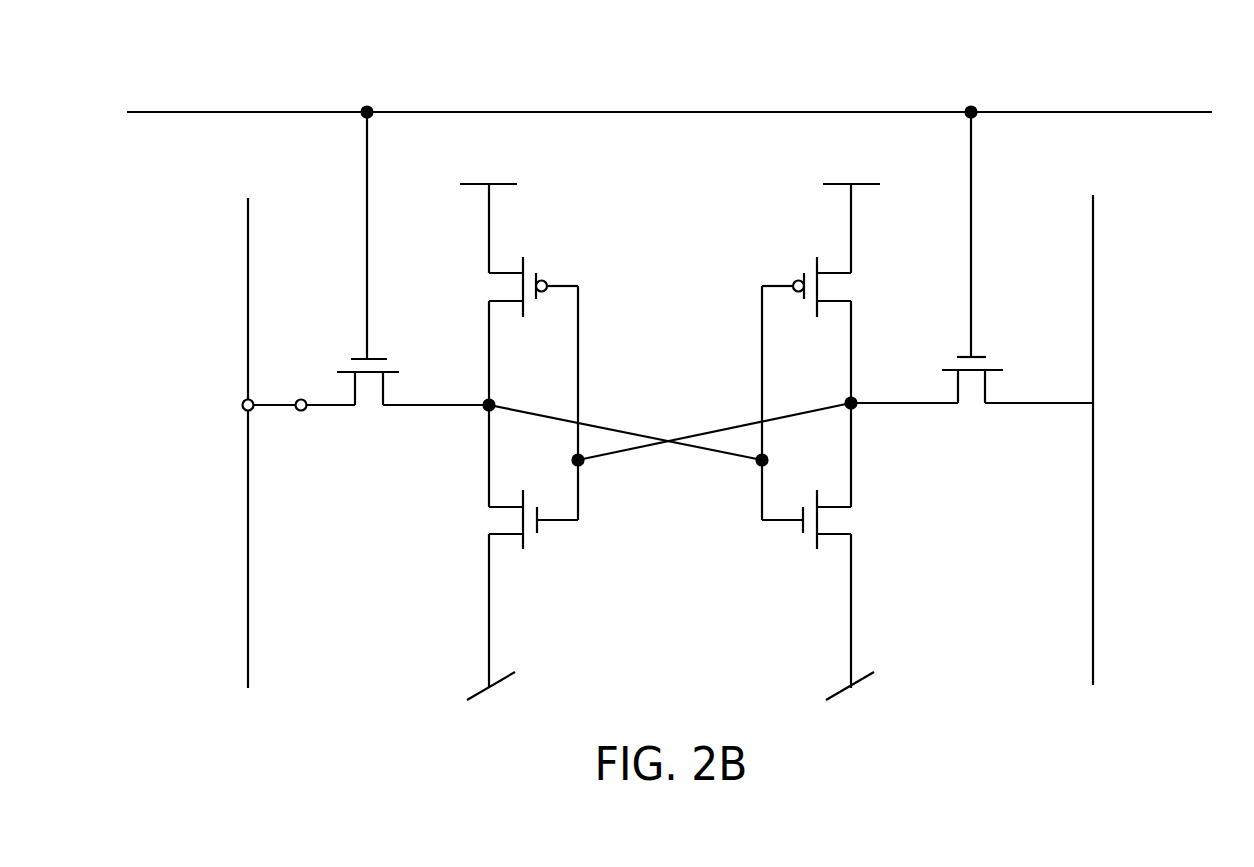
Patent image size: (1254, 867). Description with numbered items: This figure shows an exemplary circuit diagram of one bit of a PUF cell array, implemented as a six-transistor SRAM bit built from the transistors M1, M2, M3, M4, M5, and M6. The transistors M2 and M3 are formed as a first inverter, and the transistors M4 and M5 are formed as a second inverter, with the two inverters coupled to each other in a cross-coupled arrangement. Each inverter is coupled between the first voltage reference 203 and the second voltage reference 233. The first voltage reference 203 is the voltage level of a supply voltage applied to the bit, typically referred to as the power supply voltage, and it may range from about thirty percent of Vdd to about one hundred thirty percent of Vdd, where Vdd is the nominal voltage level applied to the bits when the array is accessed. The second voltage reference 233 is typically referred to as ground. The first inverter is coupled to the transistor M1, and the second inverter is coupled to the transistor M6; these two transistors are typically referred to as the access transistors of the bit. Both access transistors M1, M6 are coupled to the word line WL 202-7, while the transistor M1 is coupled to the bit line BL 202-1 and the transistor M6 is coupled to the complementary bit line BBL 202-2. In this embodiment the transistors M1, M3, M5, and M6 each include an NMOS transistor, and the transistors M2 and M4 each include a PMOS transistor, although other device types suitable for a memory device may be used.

The BL 202-1 is at (248, 265).
The BBL 202-2 is at (1093, 259).
The WL 202-7 is at (1105, 111).
The first voltage reference 203 is at (670, 213).
The second voltage reference 233 is at (670, 699).
The transistor M1 is at (367, 274).
The transistor M2 is at (533, 349).
The transistor M3 is at (533, 546).
The transistor M4 is at (806, 349).
The transistor M5 is at (806, 545).
The transistor M6 is at (972, 272).